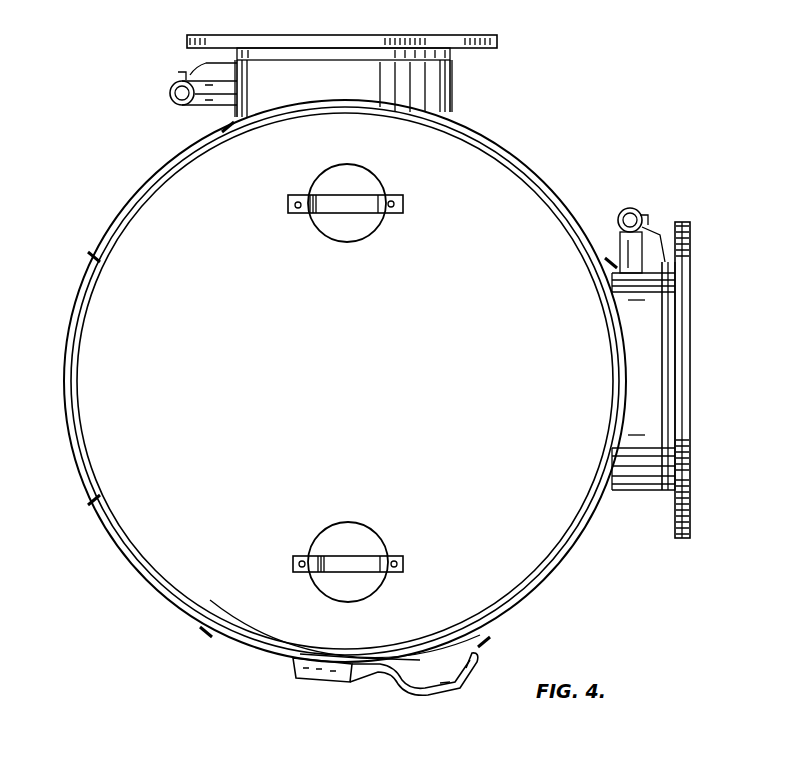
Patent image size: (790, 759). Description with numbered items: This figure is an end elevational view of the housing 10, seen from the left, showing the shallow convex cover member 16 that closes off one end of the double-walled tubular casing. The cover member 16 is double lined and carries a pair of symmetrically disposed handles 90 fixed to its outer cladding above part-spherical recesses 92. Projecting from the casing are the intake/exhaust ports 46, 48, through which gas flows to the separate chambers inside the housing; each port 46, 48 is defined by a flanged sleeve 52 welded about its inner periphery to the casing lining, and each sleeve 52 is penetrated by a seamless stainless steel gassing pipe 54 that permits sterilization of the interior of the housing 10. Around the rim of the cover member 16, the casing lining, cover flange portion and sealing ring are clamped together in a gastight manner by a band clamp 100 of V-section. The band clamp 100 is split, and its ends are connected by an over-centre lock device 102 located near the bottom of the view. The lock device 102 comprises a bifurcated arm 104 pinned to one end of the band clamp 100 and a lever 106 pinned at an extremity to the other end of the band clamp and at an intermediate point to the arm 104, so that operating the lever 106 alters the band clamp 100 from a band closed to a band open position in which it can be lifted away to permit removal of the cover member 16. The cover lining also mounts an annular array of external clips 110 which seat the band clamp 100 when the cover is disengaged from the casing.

The housing 10 is at (350, 640).
The cover member 16 is at (276, 340).
The intake/exhaust port 46 is at (432, 93).
The intake/exhaust port 48 is at (650, 470).
The flanged sleeve 52 is at (450, 80).
The gassing pipe 54 is at (232, 96).
The handle 90 is at (292, 204).
The part-spherical recess 92 is at (315, 186).
The band clamp 100 is at (250, 658).
The over-centre lock device 102 is at (420, 686).
The bifurcated arm 104 is at (300, 676).
The lever 106 is at (455, 672).
The external clip 110 is at (88, 257).